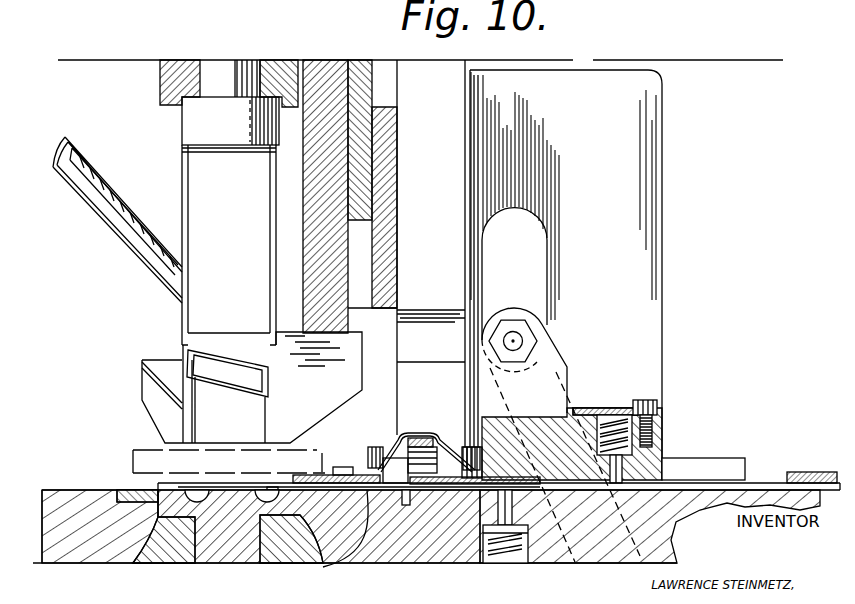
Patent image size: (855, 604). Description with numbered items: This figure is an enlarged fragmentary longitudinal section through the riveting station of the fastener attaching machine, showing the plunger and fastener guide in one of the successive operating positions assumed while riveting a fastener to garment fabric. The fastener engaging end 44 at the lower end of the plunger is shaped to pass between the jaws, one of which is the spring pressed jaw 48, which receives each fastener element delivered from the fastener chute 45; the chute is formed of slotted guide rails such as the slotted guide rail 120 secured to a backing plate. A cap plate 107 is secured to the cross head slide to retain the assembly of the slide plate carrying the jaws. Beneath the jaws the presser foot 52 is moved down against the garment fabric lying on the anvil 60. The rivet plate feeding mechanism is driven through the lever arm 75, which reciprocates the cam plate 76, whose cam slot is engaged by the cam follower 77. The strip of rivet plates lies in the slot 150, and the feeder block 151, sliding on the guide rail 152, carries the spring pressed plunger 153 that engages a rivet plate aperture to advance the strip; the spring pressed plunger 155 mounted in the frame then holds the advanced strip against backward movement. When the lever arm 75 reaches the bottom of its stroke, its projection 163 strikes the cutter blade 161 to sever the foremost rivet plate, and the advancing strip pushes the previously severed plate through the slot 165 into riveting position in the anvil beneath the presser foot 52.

The fastener engaging end 44 is at (230, 221).
The fastener chute 45 is at (122, 195).
The spring pressed jaw 48 is at (315, 412).
The presser foot 52 is at (145, 463).
The anvil 60 is at (233, 564).
The lever arm 75 is at (439, 269).
The cam plate 76 is at (648, 290).
The cam follower 77 is at (522, 341).
The cap plate 107 is at (315, 244).
The slotted guide rail 120 is at (98, 205).
The slot 150 is at (813, 457).
The feeder block 151 is at (662, 435).
The guide rail 152 is at (712, 462).
The spring pressed plunger 153 is at (618, 488).
The spring pressed plunger 155 is at (500, 510).
The cutter blade 161 is at (366, 454).
The projection 163 is at (420, 337).
The slot 165 is at (352, 562).